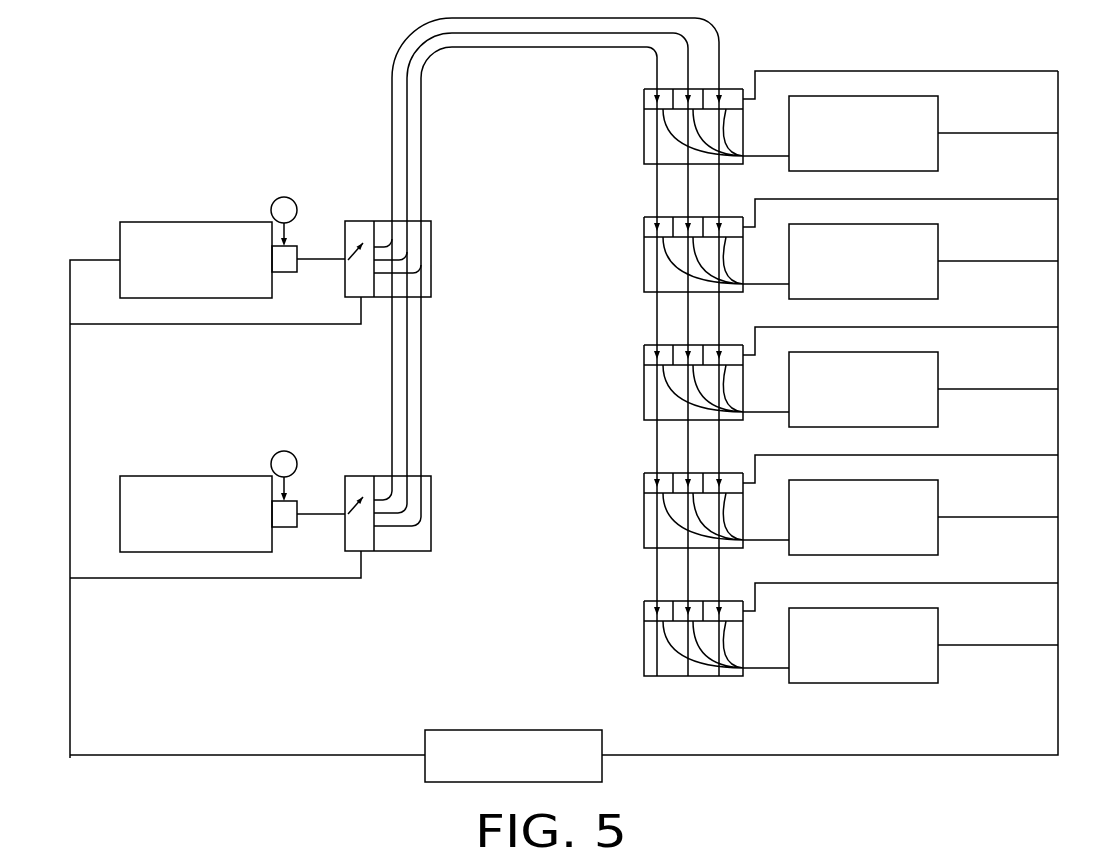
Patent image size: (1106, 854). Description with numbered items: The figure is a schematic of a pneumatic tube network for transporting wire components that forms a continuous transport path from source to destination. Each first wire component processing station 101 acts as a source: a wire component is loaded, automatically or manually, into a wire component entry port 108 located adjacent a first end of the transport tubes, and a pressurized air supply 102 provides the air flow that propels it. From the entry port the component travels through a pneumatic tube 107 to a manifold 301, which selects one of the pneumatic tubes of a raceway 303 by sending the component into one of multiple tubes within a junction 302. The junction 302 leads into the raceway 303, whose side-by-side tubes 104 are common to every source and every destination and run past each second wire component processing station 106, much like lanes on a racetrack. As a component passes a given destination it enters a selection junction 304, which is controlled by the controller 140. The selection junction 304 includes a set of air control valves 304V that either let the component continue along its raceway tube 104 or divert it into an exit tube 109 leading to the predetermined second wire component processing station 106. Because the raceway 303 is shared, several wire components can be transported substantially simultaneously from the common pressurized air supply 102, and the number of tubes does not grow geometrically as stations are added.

The first wire component processing station 101 is at (178, 222).
The pressurized air supply 102 is at (278, 200).
The pneumatic tube 104 is at (422, 147).
The second wire component processing station 106 is at (938, 110).
The pneumatic tube 107 is at (317, 260).
The wire component entry port 108 is at (284, 272).
The pneumatic tube 109 is at (758, 156).
The controller 140 is at (493, 729).
The manifold 301 is at (360, 221).
The junction 302 is at (432, 265).
The raceway 303 is at (422, 397).
The selection junction 304 is at (644, 143).
The air control valves 304V is at (644, 122).